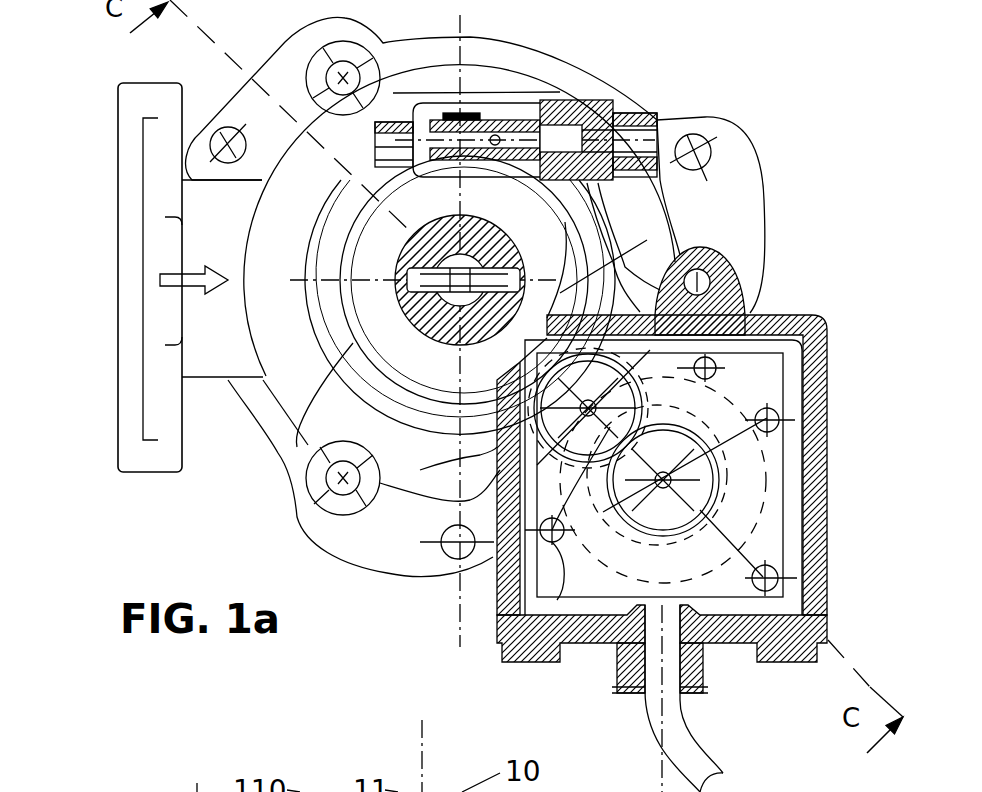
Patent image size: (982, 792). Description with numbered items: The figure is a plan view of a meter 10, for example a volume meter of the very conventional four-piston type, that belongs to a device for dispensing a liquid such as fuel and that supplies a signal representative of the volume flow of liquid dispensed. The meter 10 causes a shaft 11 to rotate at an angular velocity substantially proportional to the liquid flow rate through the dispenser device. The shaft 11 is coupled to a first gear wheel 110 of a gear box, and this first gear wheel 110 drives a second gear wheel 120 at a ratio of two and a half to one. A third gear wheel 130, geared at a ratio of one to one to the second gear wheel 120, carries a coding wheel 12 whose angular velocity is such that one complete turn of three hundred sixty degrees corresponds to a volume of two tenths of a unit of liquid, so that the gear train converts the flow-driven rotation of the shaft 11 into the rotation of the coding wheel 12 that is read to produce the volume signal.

The meter 10 is at (597, 50).
The shaft 11 is at (423, 218).
The first gear wheel 110 is at (283, 457).
The second gear wheel 120 is at (422, 497).
The coding wheel 12 is at (793, 533).
The third gear wheel 130 is at (743, 498).